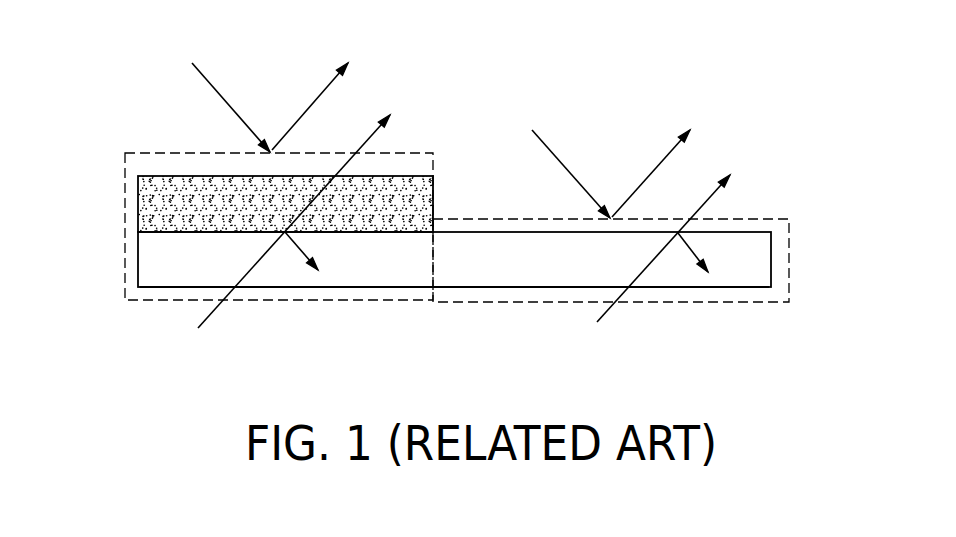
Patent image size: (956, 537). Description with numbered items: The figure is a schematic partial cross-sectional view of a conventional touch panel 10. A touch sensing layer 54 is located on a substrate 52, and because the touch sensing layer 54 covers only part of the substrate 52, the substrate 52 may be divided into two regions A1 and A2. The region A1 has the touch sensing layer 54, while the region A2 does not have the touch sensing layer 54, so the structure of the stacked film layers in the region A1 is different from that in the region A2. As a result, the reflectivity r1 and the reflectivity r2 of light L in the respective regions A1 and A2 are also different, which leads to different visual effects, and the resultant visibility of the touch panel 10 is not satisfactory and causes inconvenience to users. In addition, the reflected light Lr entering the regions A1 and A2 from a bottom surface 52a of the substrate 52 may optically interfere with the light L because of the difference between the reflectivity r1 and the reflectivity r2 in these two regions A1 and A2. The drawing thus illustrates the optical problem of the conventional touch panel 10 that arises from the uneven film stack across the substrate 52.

The touch panel 10 is at (807, 410).
The substrate 52 is at (760, 262).
The bottom surface 52a is at (675, 289).
The touch sensing layer 54 is at (157, 205).
The region A1 is at (125, 173).
The region A2 is at (748, 219).
The light L is at (396, 122).
The reflectivity r1 is at (304, 96).
The reflectivity r2 is at (645, 163).
The reflected light Lr is at (459, 243).